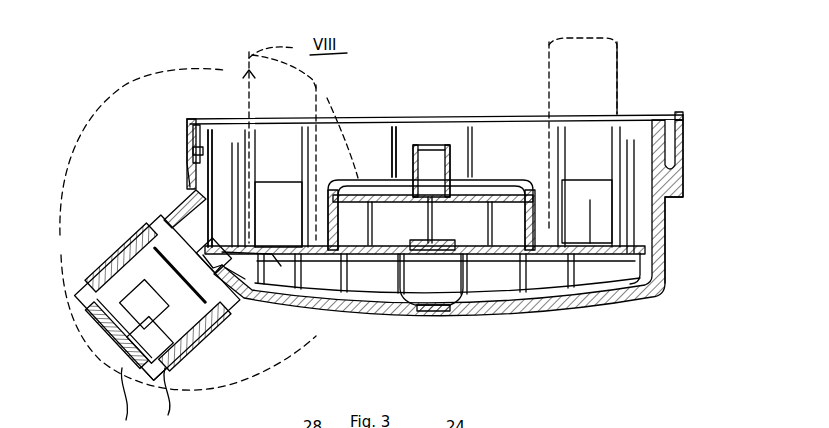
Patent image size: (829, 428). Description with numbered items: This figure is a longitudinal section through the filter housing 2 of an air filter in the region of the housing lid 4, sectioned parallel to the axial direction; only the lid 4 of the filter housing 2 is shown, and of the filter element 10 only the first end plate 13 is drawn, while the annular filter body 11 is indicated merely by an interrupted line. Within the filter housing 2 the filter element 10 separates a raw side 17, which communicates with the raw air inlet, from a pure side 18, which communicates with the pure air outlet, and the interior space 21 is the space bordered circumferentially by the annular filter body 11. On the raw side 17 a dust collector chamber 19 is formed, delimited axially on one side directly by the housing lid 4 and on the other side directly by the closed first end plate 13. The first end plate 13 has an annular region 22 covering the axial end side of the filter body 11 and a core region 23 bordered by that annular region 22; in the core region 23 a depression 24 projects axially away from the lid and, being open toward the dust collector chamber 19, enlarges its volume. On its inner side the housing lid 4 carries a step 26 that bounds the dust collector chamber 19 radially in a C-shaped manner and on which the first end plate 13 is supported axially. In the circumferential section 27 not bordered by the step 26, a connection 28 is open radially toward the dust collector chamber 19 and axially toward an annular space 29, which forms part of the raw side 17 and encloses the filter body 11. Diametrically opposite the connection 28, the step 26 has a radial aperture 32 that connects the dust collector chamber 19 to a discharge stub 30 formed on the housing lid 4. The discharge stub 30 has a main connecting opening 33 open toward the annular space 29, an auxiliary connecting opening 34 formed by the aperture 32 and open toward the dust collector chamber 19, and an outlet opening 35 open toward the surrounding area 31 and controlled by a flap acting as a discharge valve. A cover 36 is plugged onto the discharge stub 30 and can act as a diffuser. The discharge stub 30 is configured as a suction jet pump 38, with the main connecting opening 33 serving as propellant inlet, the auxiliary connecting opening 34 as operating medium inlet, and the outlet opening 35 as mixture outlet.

The filter housing 2 is at (583, 310).
The housing lid 4 is at (542, 310).
The filter element 10 is at (622, 80).
The annular filter body 11 is at (320, 84).
The first end plate 13 is at (623, 287).
The raw side 17 is at (226, 134).
The pure side 18 is at (407, 140).
The dust collector chamber 19 is at (444, 287).
The interior space 21 is at (512, 149).
The annular region 22 is at (590, 232).
The core region 23 is at (507, 193).
The depression 24 is at (527, 200).
The step 26 is at (216, 240).
The circumferential section 27 is at (677, 240).
The connection 28 is at (623, 263).
The annular space 29 is at (640, 152).
The discharge stub 30 is at (114, 243).
The surrounding area 31 is at (95, 398).
The radial aperture 32 is at (233, 272).
The main connecting opening 33 is at (200, 212).
The auxiliary connecting opening 34 is at (250, 309).
The outlet opening 35 is at (117, 315).
The cover 36 is at (146, 398).
The suction jet pump 38 is at (171, 280).